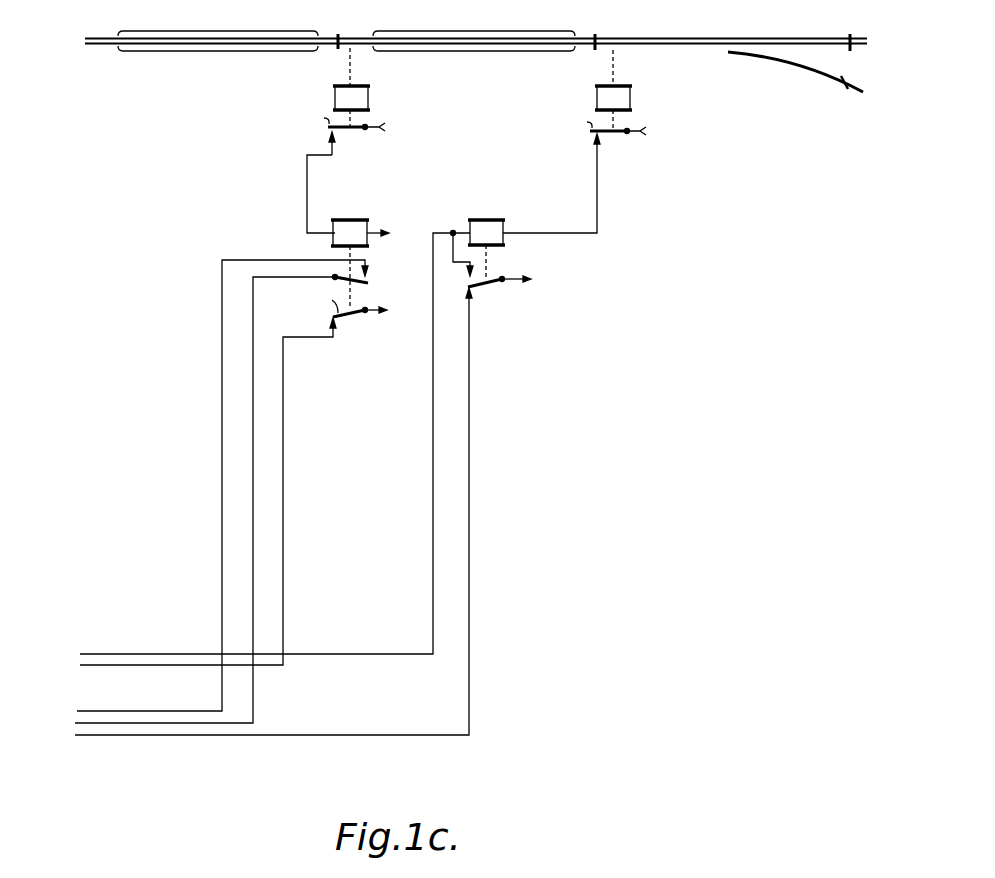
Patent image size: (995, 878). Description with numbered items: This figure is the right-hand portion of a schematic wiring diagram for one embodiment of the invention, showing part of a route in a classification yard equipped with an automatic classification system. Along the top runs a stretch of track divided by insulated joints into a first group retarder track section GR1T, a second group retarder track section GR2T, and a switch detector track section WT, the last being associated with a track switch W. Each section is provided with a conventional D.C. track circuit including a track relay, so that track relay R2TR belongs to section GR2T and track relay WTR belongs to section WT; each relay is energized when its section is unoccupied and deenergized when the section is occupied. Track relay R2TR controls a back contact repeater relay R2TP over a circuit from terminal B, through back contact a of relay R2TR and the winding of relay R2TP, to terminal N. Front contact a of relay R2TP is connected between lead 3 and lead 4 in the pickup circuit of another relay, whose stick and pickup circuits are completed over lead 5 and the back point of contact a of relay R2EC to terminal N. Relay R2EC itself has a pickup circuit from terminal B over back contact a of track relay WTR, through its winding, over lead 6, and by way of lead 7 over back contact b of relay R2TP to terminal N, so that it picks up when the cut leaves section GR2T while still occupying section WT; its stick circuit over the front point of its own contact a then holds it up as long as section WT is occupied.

The lead 3 is at (150, 723).
The lead 4 is at (128, 711).
The lead 5 is at (102, 735).
The lead 6 is at (123, 653).
The lead 7 is at (122, 667).
The first group retarder track section GR1T is at (211, 28).
The second group retarder track section GR2T is at (466, 28).
The switch detector track section WT is at (731, 30).
The track switch W is at (735, 56).
The track relay R2TR is at (356, 93).
The track relay WTR is at (617, 96).
The back contact repeater relay R2TP is at (362, 256).
The relay R2EC is at (527, 214).